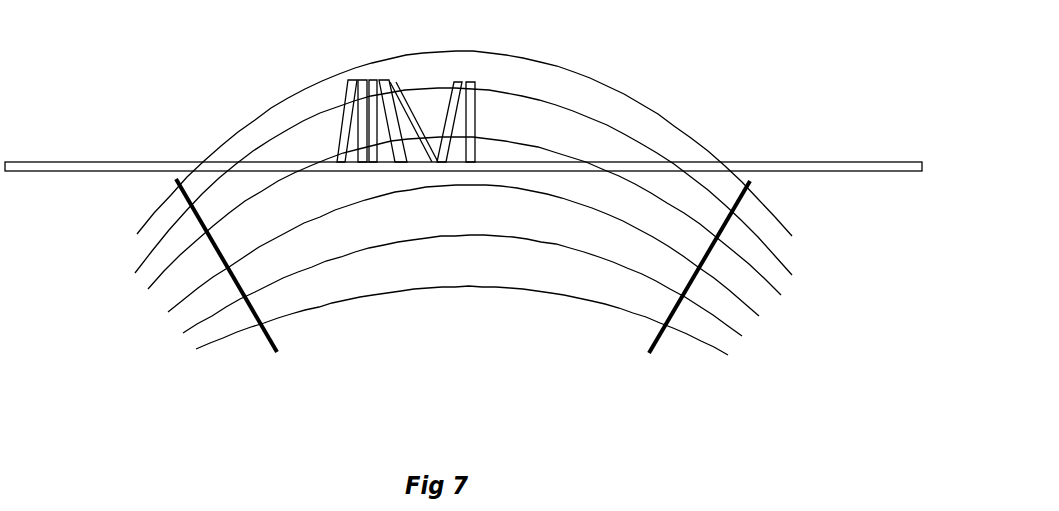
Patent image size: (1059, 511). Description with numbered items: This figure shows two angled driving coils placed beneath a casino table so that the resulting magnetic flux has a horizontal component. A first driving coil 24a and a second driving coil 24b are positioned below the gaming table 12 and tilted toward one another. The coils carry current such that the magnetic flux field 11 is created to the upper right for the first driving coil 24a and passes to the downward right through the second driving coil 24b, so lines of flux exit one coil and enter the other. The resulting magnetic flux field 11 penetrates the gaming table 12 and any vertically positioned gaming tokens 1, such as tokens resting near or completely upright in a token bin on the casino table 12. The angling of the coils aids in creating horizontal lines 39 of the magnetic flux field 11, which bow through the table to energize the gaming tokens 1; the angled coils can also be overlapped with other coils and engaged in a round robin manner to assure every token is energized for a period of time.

The gaming tokens 1 is at (347, 74).
The magnetic flux field 11 is at (602, 85).
The casino table 12 is at (150, 160).
The first driving coil 24a is at (275, 350).
The second driving coil 24b is at (650, 345).
The horizontal lines of the magnetic flux field 39 is at (536, 243).